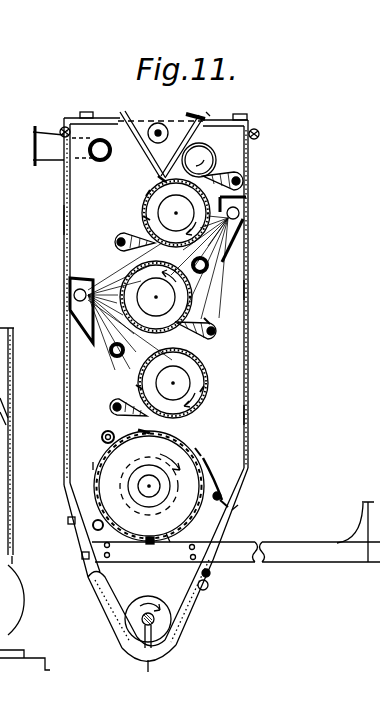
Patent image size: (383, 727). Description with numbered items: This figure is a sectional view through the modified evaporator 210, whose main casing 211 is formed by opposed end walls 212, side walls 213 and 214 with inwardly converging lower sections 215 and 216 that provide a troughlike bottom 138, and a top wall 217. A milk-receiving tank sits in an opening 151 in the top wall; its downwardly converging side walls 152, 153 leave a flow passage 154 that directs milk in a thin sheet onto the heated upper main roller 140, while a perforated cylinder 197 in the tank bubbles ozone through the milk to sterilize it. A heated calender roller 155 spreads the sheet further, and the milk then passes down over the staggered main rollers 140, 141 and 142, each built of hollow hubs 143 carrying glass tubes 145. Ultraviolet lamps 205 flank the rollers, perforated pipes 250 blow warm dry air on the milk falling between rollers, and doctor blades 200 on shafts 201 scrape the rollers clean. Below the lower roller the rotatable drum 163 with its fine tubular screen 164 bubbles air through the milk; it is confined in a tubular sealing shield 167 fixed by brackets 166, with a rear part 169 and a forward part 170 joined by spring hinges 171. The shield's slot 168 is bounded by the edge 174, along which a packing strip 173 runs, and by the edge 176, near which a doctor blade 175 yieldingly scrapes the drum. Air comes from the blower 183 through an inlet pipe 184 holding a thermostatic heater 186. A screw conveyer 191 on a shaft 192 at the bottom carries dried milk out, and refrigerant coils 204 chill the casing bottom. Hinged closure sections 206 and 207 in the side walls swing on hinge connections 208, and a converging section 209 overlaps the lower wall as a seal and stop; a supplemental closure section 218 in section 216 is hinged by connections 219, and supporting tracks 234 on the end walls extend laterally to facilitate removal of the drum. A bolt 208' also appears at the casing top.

The troughlike bottom 138 is at (160, 646).
The upper main roller 140 is at (135, 209).
The main roller 141 is at (193, 305).
The lower main roller 142 is at (204, 376).
The hollow hubs 143 is at (148, 192).
The glass tubes 145 is at (145, 218).
The opening 151 is at (207, 118).
The side wall of receiving tank 152 is at (137, 125).
The side wall of receiving tank 153 is at (192, 114).
The flow passage 154 is at (159, 178).
The calender roller 155 is at (211, 158).
The rotatable drum 163 is at (204, 462).
The tubular screen 164 is at (169, 533).
The brackets 166 is at (102, 438).
The tubular sealing shield 167 is at (93, 465).
The slot 168 is at (206, 455).
The rear part of sealing shield 169 is at (92, 495).
The forward part of sealing shield 170 is at (222, 518).
The spring hinges 171 is at (151, 543).
The packing strip 173 is at (146, 433).
The edge of rear part 174 is at (112, 417).
The doctor blade 175 is at (206, 486).
The longitudinal edge of forward part 176 is at (220, 497).
The blower 183 is at (26, 603).
The inlet pipe 184 is at (14, 372).
The thermostatically controlled electric heater 186 is at (14, 410).
The screw conveyer 191 is at (160, 630).
The shaft 192 is at (140, 624).
The perforated cylinder 197 is at (166, 128).
The doctor blades 200 is at (208, 318).
The doctor blade shafts 201 is at (122, 247).
The coils 204 is at (110, 608).
The ultraviolet-ray lamps 205 is at (73, 296).
The movable closure section 206 is at (63, 250).
The movable closure section 207 is at (250, 265).
The hinge connections 208 is at (275, 500).
The bolt 208' is at (158, 134).
The converging section 209 is at (66, 508).
The modified evaporator 210 is at (271, 194).
The modified main casing 211 is at (219, 111).
The end walls 212 is at (228, 419).
The side wall 213 is at (63, 219).
The side wall 214 is at (256, 294).
The lower section of side wall 215 is at (80, 545).
The lower section of side wall 216 is at (186, 603).
The top wall 217 is at (100, 117).
The supplemental movable closure section 218 is at (225, 531).
The hinge connections 219 is at (210, 578).
The supporting tracks 234 is at (308, 547).
The perforated pipes 250 is at (110, 350).